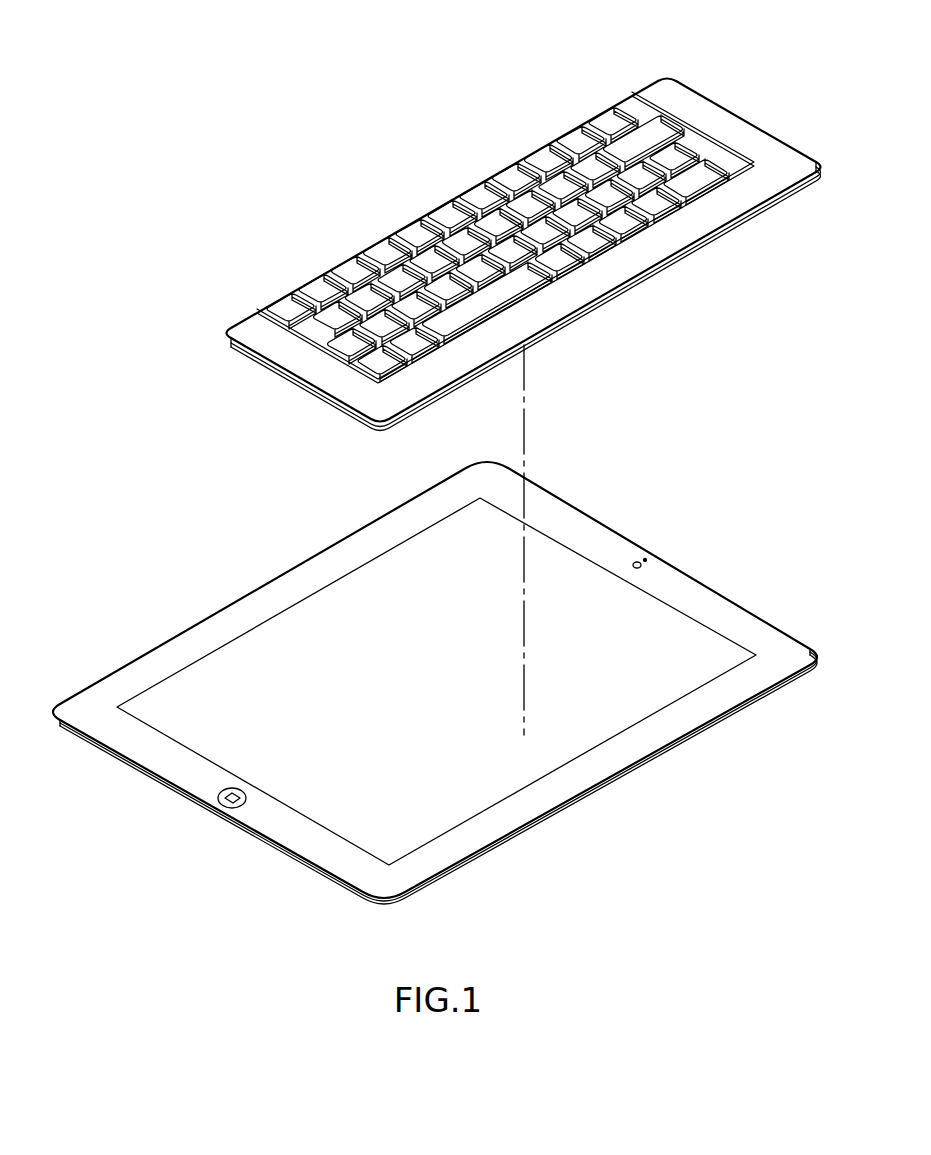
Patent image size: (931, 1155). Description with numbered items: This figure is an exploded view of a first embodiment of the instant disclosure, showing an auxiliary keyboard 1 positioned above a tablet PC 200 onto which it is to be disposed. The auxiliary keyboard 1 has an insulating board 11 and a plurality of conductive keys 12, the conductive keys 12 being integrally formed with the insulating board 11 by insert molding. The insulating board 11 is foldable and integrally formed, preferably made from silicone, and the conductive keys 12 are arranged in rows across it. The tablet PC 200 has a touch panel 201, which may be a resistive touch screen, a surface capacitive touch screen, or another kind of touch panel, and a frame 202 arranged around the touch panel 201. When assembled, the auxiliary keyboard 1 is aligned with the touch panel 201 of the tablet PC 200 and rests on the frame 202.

The auxiliary keyboard 1 is at (763, 58).
The insulating board 11 is at (730, 140).
The conductive keys 12 is at (653, 137).
The tablet PC 200 is at (650, 472).
The touch panel 201 is at (583, 585).
The frame 202 is at (660, 585).